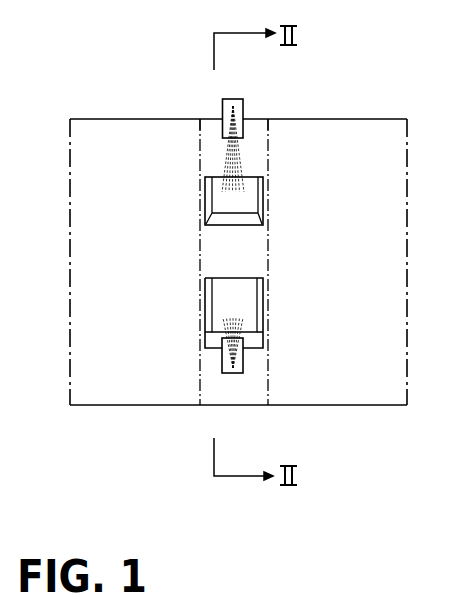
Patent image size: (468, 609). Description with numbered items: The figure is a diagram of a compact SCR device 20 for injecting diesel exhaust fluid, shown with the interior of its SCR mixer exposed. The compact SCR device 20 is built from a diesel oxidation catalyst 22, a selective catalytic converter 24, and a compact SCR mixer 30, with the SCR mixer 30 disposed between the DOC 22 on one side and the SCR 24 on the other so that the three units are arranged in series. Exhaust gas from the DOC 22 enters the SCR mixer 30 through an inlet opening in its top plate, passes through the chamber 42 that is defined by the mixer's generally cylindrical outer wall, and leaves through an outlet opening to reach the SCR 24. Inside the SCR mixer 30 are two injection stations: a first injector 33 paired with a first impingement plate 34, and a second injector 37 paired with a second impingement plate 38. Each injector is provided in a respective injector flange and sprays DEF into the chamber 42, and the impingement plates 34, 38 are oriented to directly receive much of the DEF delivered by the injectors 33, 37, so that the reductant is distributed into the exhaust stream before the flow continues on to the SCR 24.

The compact SCR device 20 is at (77, 423).
The diesel oxidation catalyst 22 is at (138, 118).
The selective catalytic converter 24 is at (407, 155).
The compact SCR mixer 30 is at (263, 112).
The first injector 33 is at (233, 98).
The first impingement plate 34 is at (223, 200).
The second injector 37 is at (233, 374).
The second impingement plate 38 is at (238, 300).
The chamber 42 is at (215, 338).